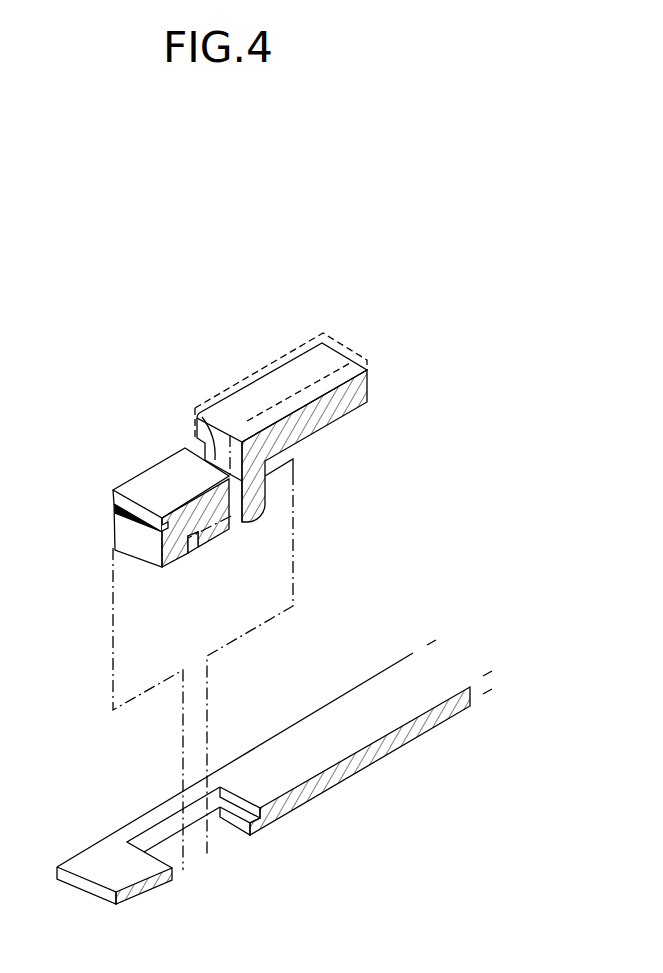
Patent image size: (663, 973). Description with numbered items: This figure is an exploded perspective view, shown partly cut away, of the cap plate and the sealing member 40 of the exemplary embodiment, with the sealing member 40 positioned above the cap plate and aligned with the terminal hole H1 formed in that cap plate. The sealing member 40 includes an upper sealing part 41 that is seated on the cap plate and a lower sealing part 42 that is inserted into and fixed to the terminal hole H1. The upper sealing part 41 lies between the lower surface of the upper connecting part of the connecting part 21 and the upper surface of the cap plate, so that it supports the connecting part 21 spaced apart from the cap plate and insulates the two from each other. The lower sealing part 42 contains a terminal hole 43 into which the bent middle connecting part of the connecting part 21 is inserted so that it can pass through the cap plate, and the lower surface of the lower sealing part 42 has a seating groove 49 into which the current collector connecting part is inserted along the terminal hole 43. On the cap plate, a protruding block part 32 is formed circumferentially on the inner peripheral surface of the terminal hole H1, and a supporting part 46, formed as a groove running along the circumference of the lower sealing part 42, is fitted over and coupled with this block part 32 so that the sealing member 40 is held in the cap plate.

The connecting part 21 is at (300, 403).
The upper sealing part 41 is at (368, 391).
The terminal hole 43 is at (181, 412).
The sealing member 40 is at (148, 492).
The lower sealing part 42 is at (137, 490).
The supporting part 46 is at (145, 522).
The seating groove 49 is at (198, 538).
The terminal hole H1 is at (240, 804).
The block part 32 is at (274, 775).